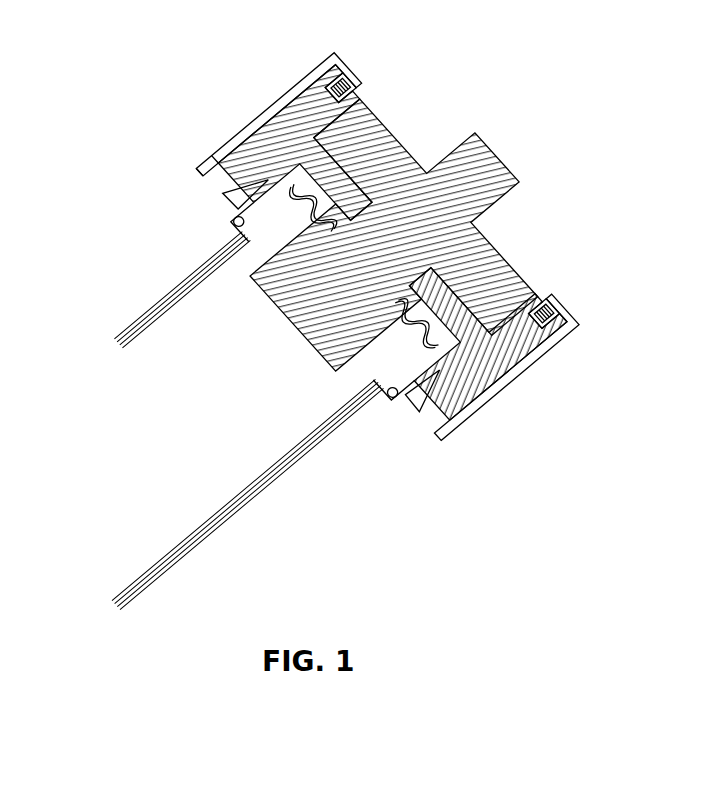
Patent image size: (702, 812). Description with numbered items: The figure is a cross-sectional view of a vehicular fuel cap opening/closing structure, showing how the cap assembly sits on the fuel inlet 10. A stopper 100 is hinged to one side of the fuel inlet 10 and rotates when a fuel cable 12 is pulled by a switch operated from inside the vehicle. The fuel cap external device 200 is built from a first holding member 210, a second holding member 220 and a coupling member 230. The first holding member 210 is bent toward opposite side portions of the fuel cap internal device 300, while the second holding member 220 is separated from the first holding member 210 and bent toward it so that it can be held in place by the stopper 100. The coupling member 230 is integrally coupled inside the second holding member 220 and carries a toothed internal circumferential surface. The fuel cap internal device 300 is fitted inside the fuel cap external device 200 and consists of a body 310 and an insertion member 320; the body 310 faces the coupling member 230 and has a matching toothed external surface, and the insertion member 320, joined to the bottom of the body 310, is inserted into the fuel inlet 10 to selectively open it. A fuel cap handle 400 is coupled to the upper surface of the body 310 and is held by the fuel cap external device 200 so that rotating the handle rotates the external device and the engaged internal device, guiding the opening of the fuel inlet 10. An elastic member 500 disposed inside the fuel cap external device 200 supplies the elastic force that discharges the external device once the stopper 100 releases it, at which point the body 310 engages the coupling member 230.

The fuel inlet 10 is at (252, 500).
The fuel cable 12 is at (124, 316).
The stopper 100 is at (232, 218).
The fuel cap external device 200 is at (200, 15).
The first holding member 210 is at (330, 52).
The second holding member 220 is at (198, 170).
The coupling member 230 is at (240, 145).
The fuel cap internal device 300 is at (552, 458).
The body 310 is at (487, 388).
The insertion member 320 is at (370, 392).
The fuel cap handle 400 is at (397, 133).
The elastic member 500 is at (352, 100).